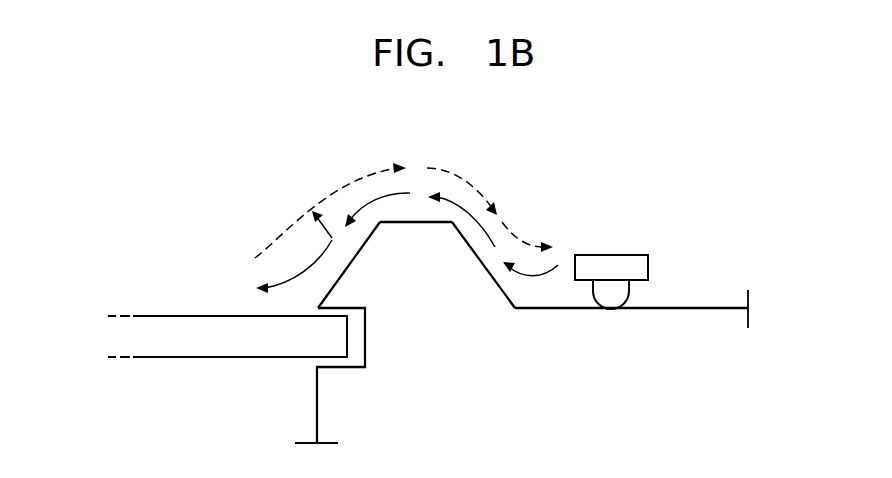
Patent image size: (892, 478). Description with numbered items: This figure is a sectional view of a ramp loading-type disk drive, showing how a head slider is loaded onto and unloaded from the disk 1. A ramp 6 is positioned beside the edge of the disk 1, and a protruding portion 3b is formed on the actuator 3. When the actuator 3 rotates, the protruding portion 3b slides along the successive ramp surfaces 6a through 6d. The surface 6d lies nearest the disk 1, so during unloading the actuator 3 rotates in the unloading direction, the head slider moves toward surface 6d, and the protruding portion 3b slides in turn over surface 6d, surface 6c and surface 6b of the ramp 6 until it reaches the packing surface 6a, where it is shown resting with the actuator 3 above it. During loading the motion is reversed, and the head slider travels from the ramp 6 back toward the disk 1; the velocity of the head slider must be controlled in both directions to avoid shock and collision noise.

The disk 1 is at (168, 315).
The actuator 3 is at (600, 255).
The protruding portion 3b is at (611, 300).
The ramp 6 is at (432, 317).
The packing surface 6a is at (683, 308).
The ramp surface 6b is at (490, 262).
The ramp surface 6c is at (417, 222).
The ramp surface 6d is at (345, 262).